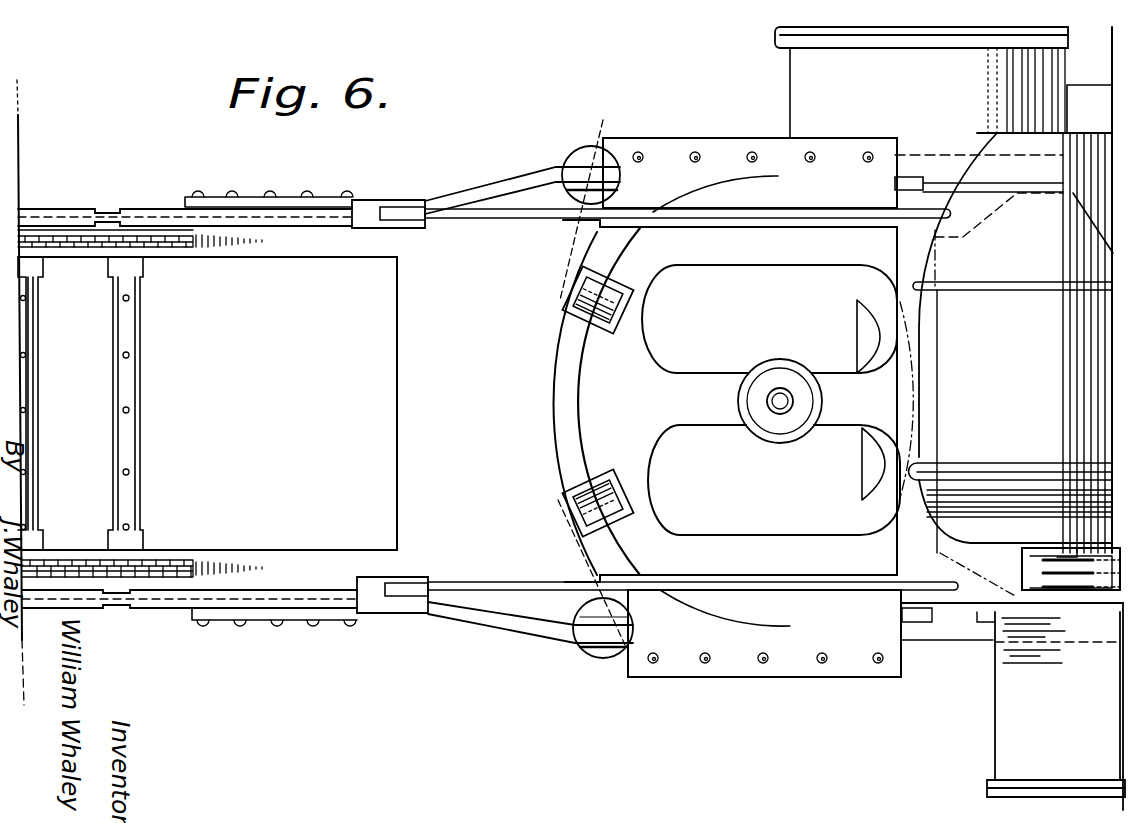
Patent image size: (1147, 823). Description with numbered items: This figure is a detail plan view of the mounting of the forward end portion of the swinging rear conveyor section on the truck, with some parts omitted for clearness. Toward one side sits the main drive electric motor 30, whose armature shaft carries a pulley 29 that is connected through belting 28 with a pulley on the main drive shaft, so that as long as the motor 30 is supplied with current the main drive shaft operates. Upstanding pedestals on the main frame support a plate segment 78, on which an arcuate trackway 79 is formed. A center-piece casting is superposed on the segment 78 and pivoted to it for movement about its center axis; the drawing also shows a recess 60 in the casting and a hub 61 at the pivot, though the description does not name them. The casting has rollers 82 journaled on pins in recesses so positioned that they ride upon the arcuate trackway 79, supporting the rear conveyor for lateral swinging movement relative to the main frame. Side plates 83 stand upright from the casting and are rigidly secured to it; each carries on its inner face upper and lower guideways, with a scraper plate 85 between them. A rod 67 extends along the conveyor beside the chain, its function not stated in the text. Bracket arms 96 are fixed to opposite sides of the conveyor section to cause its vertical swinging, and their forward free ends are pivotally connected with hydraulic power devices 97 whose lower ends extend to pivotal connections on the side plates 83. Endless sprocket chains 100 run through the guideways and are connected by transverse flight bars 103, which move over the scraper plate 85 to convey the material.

The belting 28 is at (1113, 587).
The pulley 29 is at (1077, 580).
The main drive electric motor 30 is at (950, 418).
The recess 60 is at (700, 384).
The hub pin 61 is at (782, 393).
The rod 67 is at (150, 230).
The plate segment 78 is at (643, 657).
The arcuate trackway 79 is at (557, 410).
The rollers 82 is at (577, 310).
The side plates 83 is at (507, 235).
The scraper plate 85 is at (383, 413).
The bracket arms 96 is at (503, 186).
The hydraulic power devices 97 is at (590, 153).
The endless sprocket chains 100 is at (193, 238).
The transverse flight bars 103 is at (100, 453).